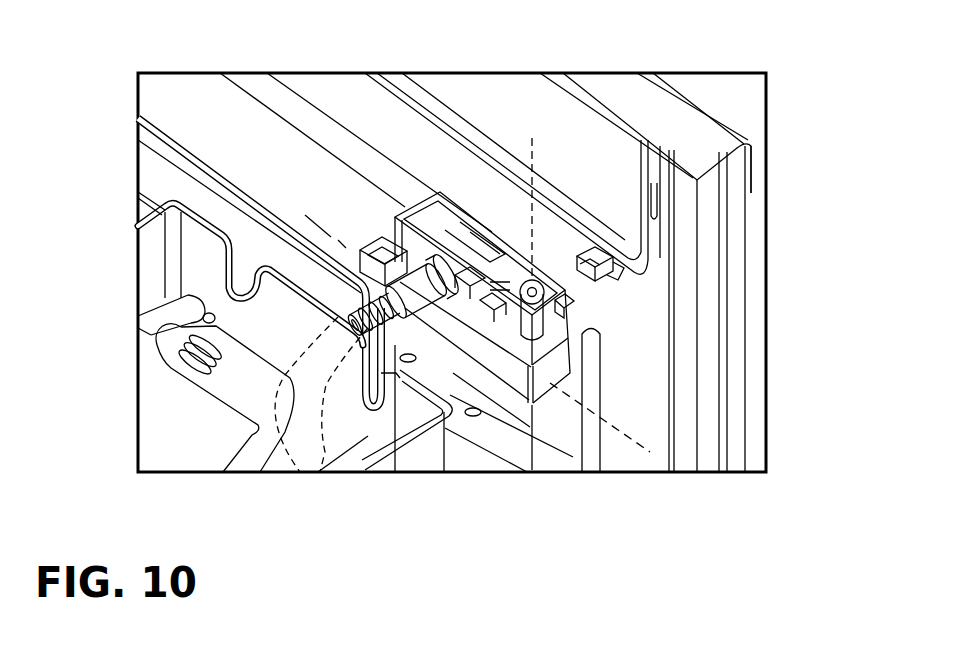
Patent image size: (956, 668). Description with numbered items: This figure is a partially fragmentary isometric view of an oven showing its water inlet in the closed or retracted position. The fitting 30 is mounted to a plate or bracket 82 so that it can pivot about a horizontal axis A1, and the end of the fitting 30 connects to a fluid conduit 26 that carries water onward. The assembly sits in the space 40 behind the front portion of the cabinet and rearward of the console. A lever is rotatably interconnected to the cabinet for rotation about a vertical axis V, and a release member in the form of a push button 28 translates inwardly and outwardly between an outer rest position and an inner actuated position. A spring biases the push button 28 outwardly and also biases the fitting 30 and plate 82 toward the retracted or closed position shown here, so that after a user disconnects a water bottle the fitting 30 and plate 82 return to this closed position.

The plate or bracket 82 is at (407, 220).
The vertical axis V is at (533, 217).
The push button 28 is at (628, 264).
The fitting 30 is at (398, 322).
The space 40 is at (463, 452).
The horizontal axis A1 is at (613, 427).
The fluid conduit 26 is at (320, 481).